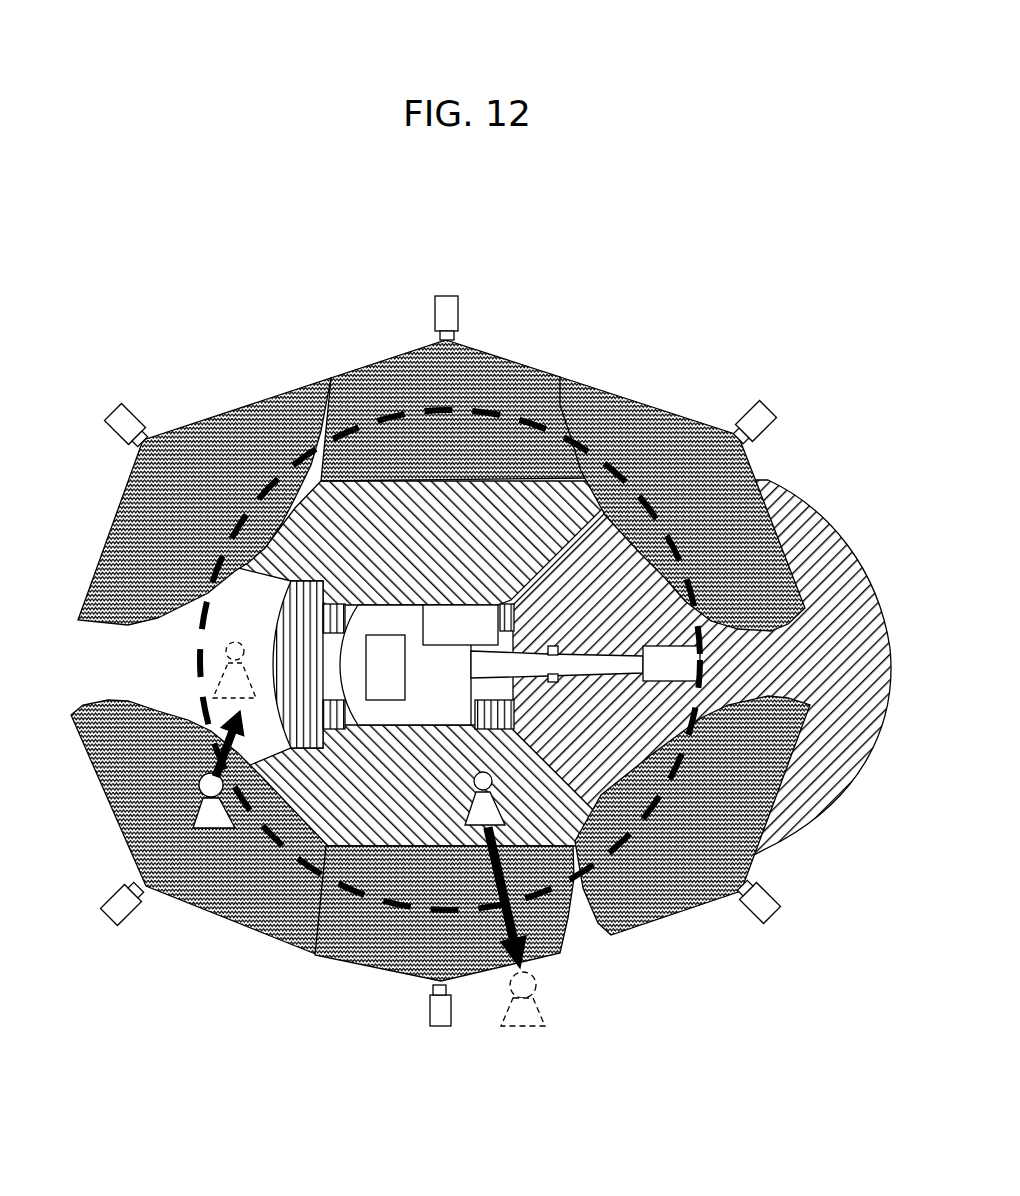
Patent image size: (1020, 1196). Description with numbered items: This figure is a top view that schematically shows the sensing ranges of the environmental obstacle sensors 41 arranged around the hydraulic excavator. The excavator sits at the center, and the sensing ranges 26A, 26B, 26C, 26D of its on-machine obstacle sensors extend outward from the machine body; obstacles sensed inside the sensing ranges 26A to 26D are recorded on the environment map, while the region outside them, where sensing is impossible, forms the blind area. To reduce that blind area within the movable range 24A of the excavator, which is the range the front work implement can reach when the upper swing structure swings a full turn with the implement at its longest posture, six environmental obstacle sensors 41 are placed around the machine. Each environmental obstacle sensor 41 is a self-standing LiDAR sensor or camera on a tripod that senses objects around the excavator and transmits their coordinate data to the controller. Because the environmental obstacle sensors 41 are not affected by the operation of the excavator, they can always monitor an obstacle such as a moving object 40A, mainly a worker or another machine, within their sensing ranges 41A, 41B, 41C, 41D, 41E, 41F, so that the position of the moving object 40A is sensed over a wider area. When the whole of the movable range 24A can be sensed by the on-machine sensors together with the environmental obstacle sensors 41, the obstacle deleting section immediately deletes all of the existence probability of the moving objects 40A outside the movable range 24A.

The environmental obstacle sensor 41 is at (438, 288).
The sensing range 41A is at (718, 504).
The sensing range 41B is at (717, 849).
The sensing range 41C is at (455, 954).
The sensing range 41D is at (158, 787).
The sensing range 41E is at (168, 554).
The sensing range 41F is at (462, 392).
The sensing range 26A is at (849, 676).
The sensing range 26B is at (417, 811).
The sensing range 26C is at (442, 546).
The sensing range 26D is at (322, 672).
The moving object 40A is at (227, 632).
The movable range 24A is at (205, 672).